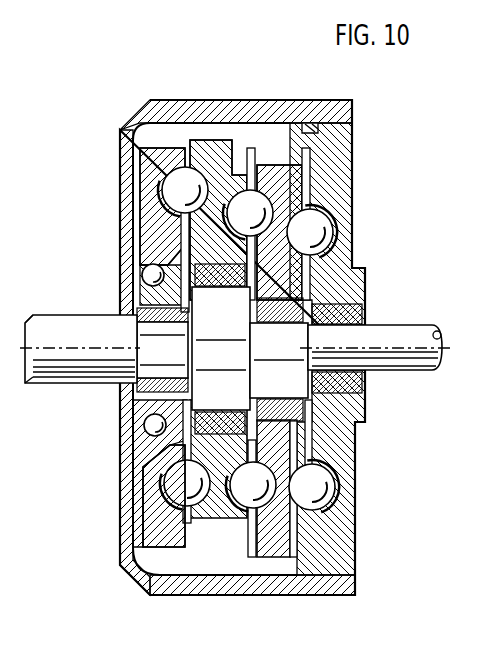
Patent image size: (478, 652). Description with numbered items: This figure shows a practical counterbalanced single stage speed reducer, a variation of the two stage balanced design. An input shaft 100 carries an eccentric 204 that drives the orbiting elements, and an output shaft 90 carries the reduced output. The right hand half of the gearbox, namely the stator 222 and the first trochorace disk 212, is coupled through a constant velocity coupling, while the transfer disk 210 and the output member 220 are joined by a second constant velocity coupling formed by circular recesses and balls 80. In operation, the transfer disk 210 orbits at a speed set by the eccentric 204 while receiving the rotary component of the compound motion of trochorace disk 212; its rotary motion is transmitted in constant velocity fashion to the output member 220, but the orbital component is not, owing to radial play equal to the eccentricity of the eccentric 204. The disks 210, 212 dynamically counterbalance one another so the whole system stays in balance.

The balls 80 is at (247, 490).
The output shaft 90 is at (62, 327).
The input shaft 100 is at (408, 333).
The eccentric 204 is at (233, 322).
The transfer disk 210 is at (214, 150).
The trochorace disk 212 is at (270, 170).
The output member 220 is at (147, 175).
The stator 222 is at (345, 190).